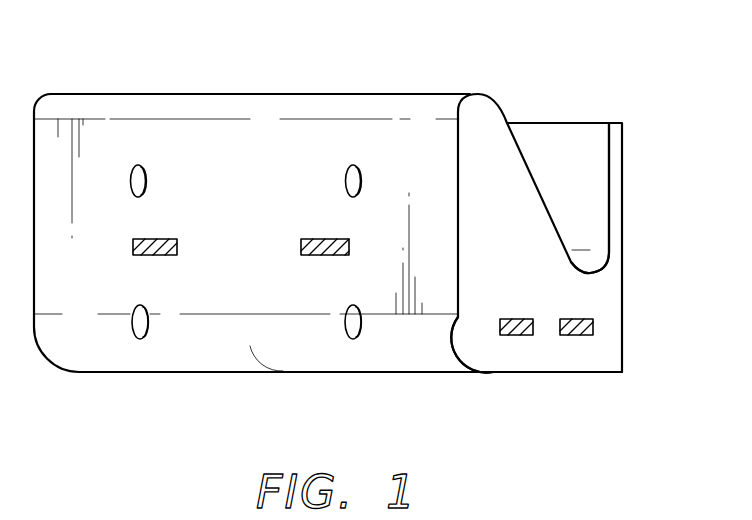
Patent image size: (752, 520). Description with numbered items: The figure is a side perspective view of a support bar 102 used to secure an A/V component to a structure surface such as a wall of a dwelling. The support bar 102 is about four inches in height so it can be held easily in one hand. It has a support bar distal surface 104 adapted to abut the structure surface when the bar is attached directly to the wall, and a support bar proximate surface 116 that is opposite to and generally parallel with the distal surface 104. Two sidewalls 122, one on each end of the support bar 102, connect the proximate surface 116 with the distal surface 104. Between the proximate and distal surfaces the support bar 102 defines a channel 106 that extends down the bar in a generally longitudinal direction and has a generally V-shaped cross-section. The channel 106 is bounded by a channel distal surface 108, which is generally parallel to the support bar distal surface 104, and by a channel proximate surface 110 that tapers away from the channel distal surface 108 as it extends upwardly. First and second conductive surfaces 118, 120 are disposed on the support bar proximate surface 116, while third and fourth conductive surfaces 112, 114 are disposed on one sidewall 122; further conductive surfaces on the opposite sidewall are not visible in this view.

The support bar 102 is at (300, 358).
The support bar distal surface 104 is at (622, 291).
The channel 106 is at (567, 172).
The channel distal surface 108 is at (598, 142).
The channel proximate surface 110 is at (513, 137).
The third conductive surface 112 is at (590, 328).
The fourth conductive surface 114 is at (513, 336).
The support bar proximate surface 116 is at (208, 128).
The first conductive surface 118 is at (326, 239).
The second conductive surface 120 is at (158, 239).
The sidewall 122 is at (489, 351).